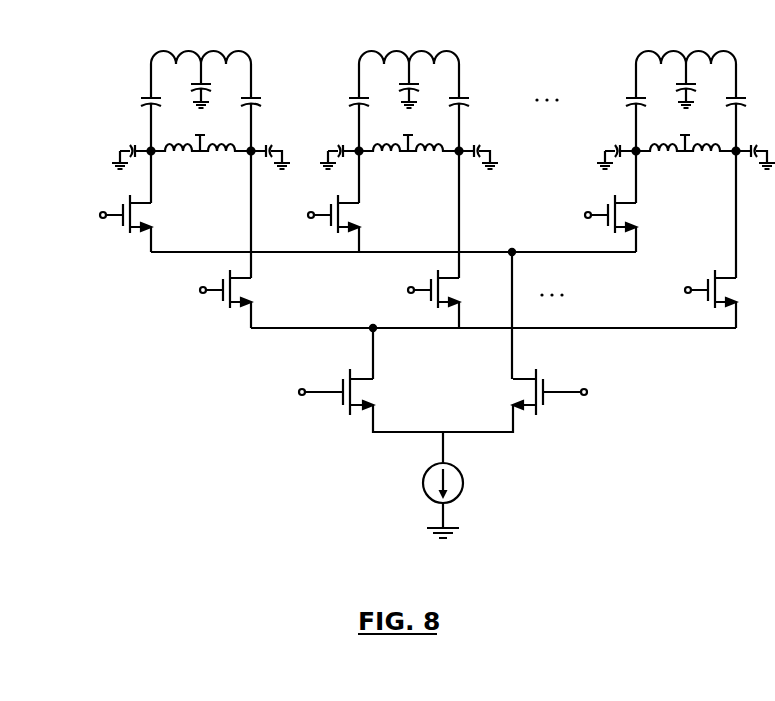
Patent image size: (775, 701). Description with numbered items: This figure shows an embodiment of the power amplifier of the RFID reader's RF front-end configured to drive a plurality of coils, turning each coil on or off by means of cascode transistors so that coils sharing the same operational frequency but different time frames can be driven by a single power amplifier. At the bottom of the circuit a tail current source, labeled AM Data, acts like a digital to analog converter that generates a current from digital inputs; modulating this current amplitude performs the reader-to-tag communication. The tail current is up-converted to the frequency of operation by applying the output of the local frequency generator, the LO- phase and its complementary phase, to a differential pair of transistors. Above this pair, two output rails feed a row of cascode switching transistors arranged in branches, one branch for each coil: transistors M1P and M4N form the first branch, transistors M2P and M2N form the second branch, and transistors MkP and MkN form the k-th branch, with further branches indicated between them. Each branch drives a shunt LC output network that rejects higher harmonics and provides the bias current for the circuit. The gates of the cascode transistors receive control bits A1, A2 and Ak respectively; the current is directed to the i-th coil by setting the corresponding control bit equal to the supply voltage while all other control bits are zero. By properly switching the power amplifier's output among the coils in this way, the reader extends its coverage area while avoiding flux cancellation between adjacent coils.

The cascode transistor M1P is at (142, 223).
The cascode transistor M2P is at (350, 223).
The cascode transistor MkP is at (627, 223).
The cascode transistor M4N is at (239, 299).
The cascode transistor M2N is at (447, 299).
The cascode transistor MkN is at (724, 299).
The control bit A1 is at (135, 247).
The control bit A2 is at (343, 247).
The control bit Ak is at (621, 247).
The local oscillator input LO- is at (354, 400).
The tail current source AM Data is at (470, 483).